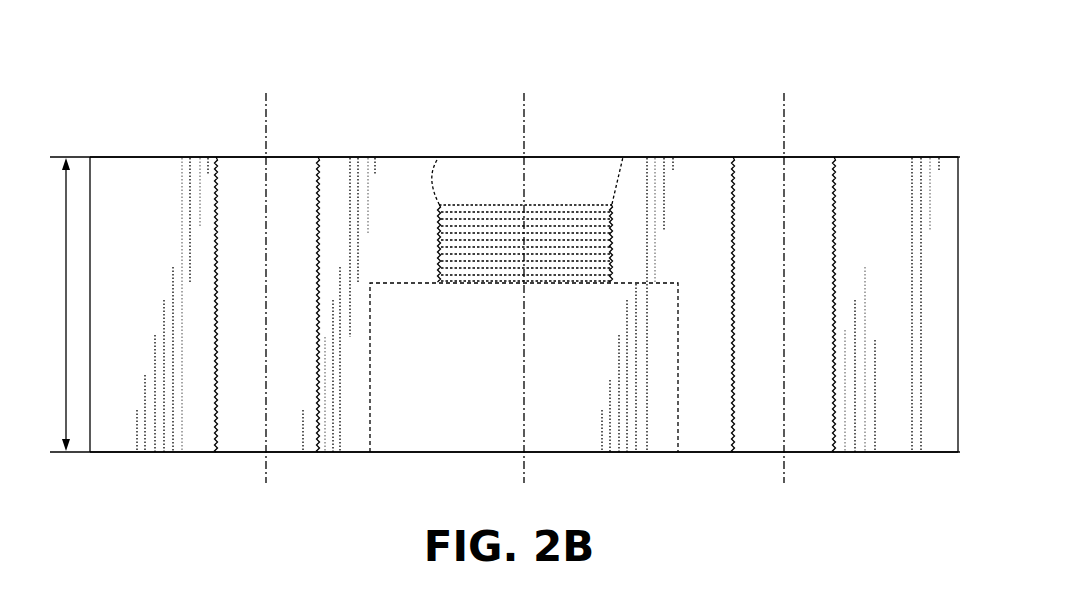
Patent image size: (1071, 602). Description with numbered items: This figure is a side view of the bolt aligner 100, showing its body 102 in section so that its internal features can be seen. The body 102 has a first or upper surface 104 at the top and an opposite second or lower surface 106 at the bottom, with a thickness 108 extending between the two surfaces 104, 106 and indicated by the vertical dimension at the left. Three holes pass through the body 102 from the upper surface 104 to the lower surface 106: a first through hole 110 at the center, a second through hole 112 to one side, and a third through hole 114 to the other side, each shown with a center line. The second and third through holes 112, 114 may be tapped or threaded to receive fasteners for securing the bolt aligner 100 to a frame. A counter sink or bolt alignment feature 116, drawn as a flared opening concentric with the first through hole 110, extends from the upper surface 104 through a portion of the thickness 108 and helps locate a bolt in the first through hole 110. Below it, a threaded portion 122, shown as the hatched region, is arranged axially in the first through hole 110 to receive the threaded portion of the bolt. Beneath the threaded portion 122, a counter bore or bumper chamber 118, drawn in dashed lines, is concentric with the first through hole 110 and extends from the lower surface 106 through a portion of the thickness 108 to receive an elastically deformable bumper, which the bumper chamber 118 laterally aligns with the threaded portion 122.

The bolt aligner 100 is at (110, 85).
The body 102 is at (885, 122).
The first or upper surface 104 is at (157, 156).
The second or lower surface 106 is at (180, 453).
The thickness 108 is at (68, 304).
The first through hole 110 is at (562, 172).
The second through hole 112 is at (320, 202).
The third through hole 114 is at (743, 183).
The counter sink or bolt alignment feature 116 is at (437, 160).
The counter bore or bumper chamber 118 is at (370, 410).
The threaded portion 122 is at (447, 241).